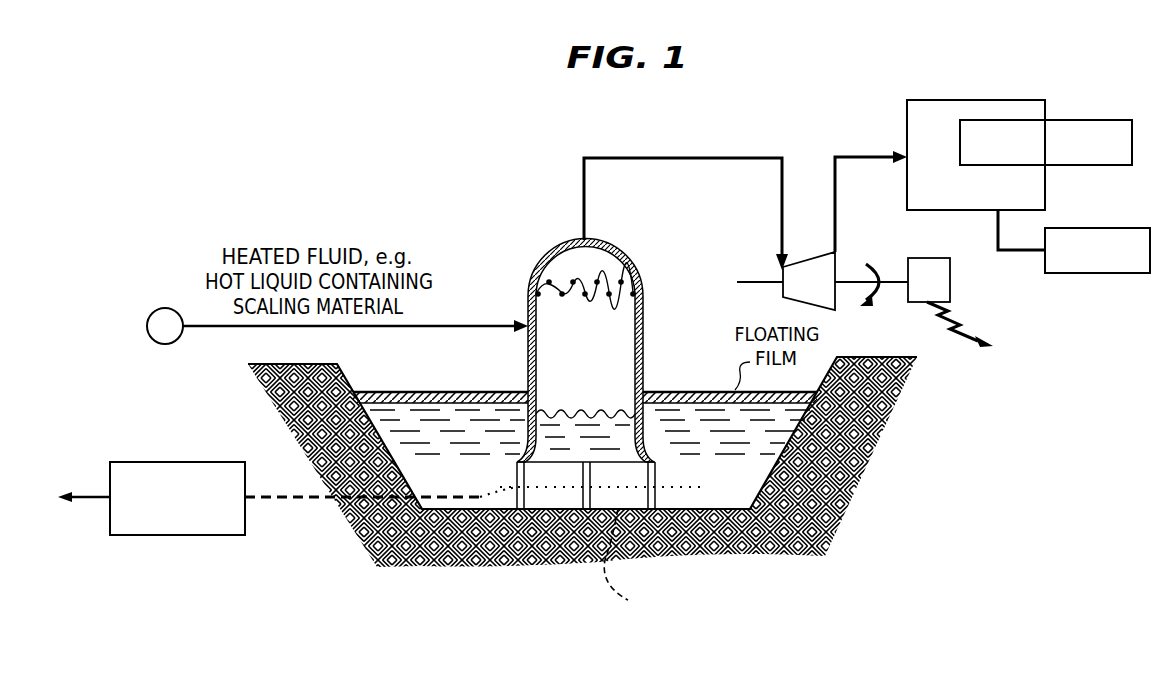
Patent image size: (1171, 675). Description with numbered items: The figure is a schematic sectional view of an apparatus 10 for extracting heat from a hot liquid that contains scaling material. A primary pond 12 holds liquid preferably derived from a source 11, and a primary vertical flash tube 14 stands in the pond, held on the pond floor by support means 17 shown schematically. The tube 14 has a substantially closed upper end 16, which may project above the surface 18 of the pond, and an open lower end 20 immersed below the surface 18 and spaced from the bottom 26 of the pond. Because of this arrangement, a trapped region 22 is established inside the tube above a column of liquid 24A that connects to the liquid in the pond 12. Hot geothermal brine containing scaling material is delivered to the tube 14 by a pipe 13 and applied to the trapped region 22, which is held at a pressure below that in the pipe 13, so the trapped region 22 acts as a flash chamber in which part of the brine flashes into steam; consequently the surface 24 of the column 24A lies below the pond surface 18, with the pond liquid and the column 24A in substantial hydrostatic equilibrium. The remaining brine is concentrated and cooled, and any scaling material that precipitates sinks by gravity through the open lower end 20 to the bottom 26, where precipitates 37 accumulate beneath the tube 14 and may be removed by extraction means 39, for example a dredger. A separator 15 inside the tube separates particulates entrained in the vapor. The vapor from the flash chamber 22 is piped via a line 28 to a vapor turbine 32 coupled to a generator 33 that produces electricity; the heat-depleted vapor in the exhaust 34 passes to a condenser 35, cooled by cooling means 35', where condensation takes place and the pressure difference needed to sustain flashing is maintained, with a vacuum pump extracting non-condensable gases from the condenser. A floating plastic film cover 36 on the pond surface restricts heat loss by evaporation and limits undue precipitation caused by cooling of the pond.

The apparatus 10 is at (510, 216).
The source 11 is at (165, 326).
The primary pond 12 is at (712, 432).
The pipe 13 is at (471, 329).
The primary vertical flash tube 14 is at (660, 338).
The separator 15 is at (563, 294).
The upper end 16 is at (530, 268).
The support means 17 is at (517, 478).
The surface 18 is at (478, 392).
The open lower end 20 is at (655, 463).
The trapped region 22 is at (595, 264).
The surface 24 is at (610, 414).
The column of liquid 24A is at (572, 444).
The bottom 26 is at (730, 508).
The line 28 is at (678, 158).
The vapor turbine 32 is at (836, 262).
The generator 33 is at (952, 278).
The exhaust 34 is at (863, 153).
The condenser 35 is at (976, 151).
The cooling means 35' is at (1057, 111).
The plastic film cover 36 is at (1115, 273).
The precipitates 37 is at (628, 562).
The extraction means 39 is at (175, 535).